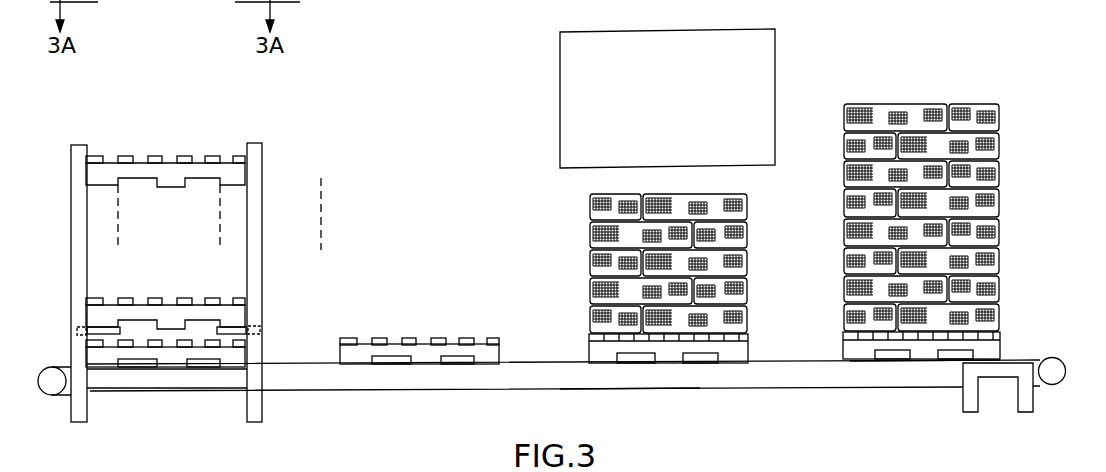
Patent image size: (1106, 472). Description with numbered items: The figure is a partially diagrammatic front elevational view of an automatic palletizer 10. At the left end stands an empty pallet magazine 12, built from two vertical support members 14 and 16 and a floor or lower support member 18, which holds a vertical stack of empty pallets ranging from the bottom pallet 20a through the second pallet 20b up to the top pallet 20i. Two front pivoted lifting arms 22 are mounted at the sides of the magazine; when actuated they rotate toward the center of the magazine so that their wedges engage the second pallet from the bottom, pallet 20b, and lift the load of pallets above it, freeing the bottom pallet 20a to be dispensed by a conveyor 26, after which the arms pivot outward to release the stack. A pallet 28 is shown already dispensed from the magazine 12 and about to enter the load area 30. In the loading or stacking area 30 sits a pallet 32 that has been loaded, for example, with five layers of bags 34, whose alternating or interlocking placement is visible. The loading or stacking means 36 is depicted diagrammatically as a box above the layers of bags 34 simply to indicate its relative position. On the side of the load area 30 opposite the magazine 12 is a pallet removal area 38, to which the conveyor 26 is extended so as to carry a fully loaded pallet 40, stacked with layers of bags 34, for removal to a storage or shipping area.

The automatic palletizer 10 is at (675, 392).
The empty pallet magazine 12 is at (168, 155).
The vertical support member 14 is at (78, 150).
The vertical support member 16 is at (255, 147).
The lower support member 18 is at (82, 408).
The empty pallet 20i is at (233, 175).
The empty pallet 20b is at (237, 315).
The empty pallet 20a is at (233, 357).
The front pivoted lifting arm 22 is at (243, 327).
The conveyor 26 is at (1061, 364).
The pallet 28 is at (427, 345).
The load area 30 is at (622, 380).
The pallet 32 is at (598, 357).
The bags 34 is at (993, 200).
The loading or stacking means 36 is at (572, 96).
The pallet removal area 38 is at (920, 370).
The pallet 40 is at (993, 350).